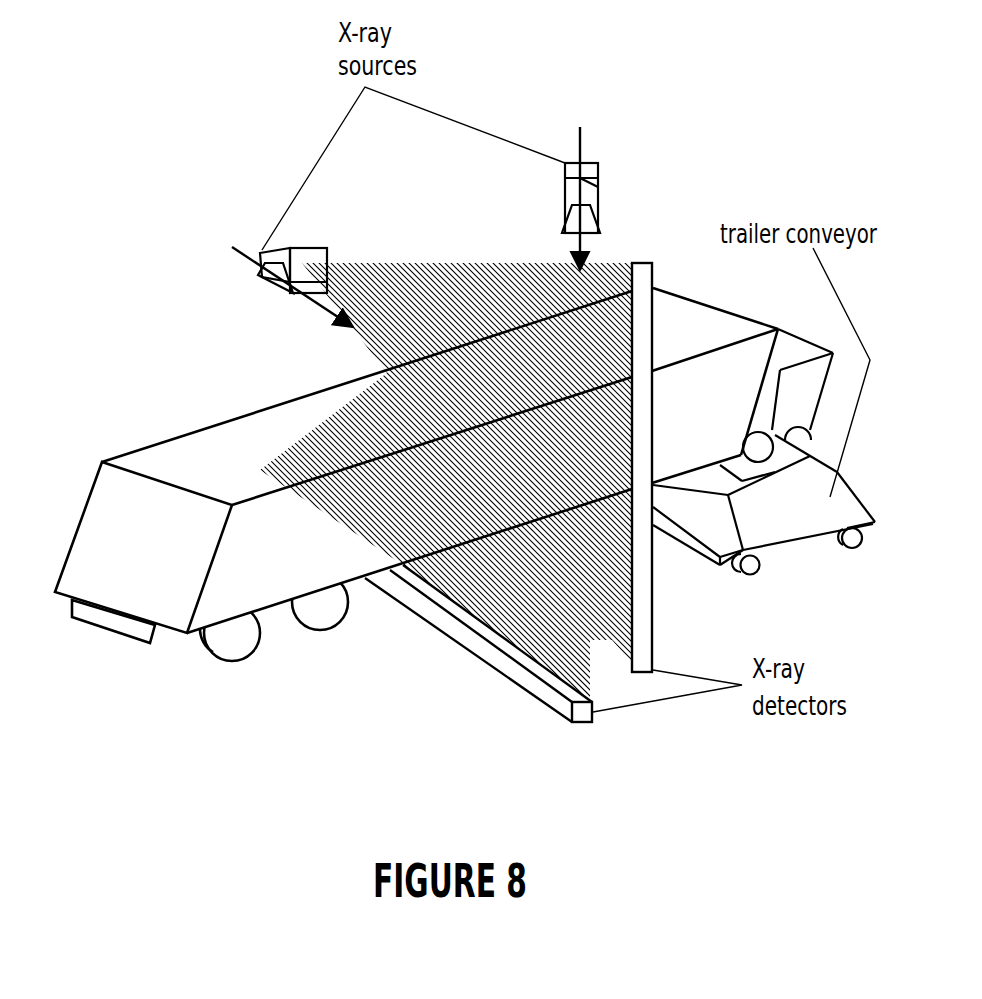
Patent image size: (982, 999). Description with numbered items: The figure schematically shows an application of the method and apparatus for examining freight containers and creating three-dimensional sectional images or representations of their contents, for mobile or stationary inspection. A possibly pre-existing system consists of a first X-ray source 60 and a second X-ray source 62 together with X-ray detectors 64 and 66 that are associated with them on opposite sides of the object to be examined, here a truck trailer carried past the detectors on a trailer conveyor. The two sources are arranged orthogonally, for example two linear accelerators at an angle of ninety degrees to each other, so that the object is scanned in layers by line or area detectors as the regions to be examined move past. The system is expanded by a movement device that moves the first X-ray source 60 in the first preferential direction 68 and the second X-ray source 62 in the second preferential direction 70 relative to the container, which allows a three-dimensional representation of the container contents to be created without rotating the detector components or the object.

The first X-ray source 60 is at (598, 177).
The second X-ray source 62 is at (318, 254).
The X-ray detector 64 is at (653, 662).
The X-ray detector 66 is at (497, 672).
The first preferential direction 68 is at (580, 127).
The second preferential direction 70 is at (256, 267).